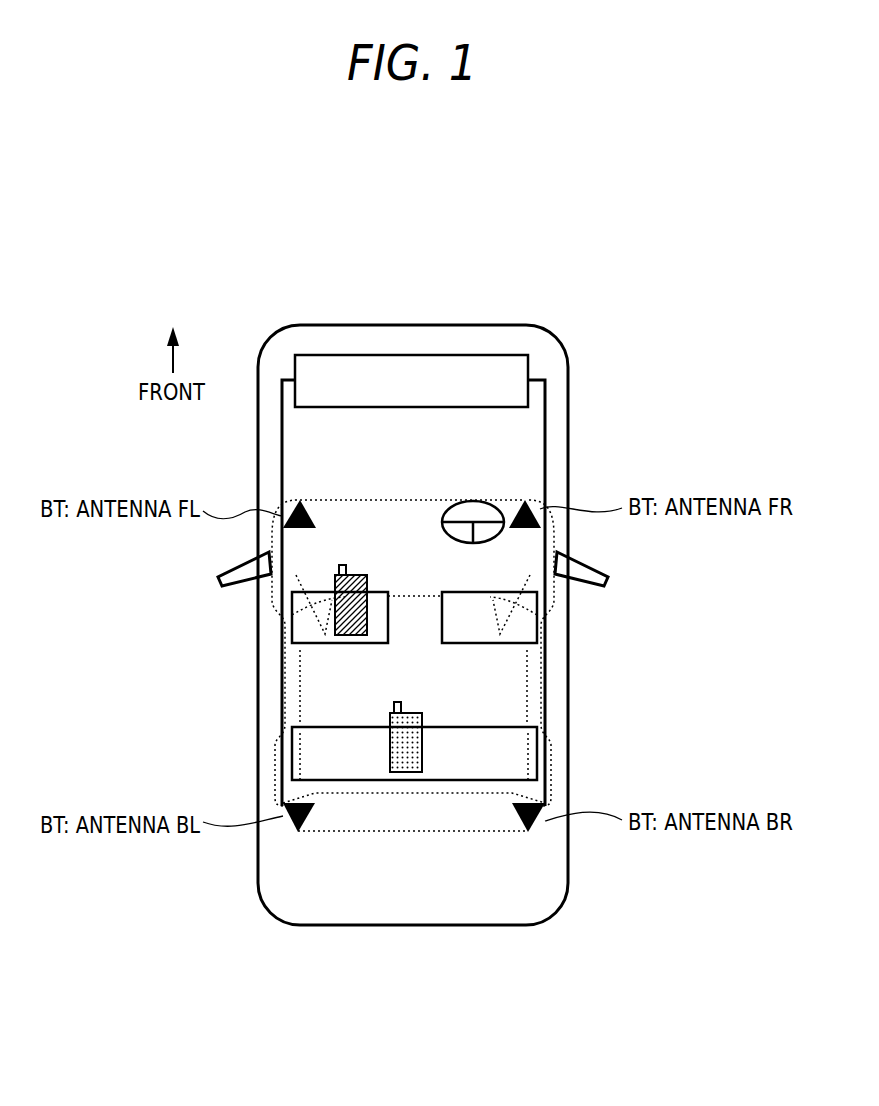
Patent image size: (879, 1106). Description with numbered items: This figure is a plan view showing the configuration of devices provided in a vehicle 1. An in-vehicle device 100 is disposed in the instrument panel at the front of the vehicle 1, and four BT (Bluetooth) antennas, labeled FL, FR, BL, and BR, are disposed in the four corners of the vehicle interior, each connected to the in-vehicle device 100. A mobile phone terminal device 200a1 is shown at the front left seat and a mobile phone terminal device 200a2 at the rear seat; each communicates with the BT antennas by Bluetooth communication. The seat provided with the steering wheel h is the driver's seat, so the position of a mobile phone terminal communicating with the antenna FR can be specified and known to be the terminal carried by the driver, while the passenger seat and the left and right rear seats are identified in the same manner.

The vehicle 1 is at (570, 387).
The in-vehicle device 100 is at (446, 334).
The steering wheel h is at (498, 537).
The mobile phone terminal device 200a1 is at (333, 626).
The mobile phone terminal device 200a2 is at (390, 742).